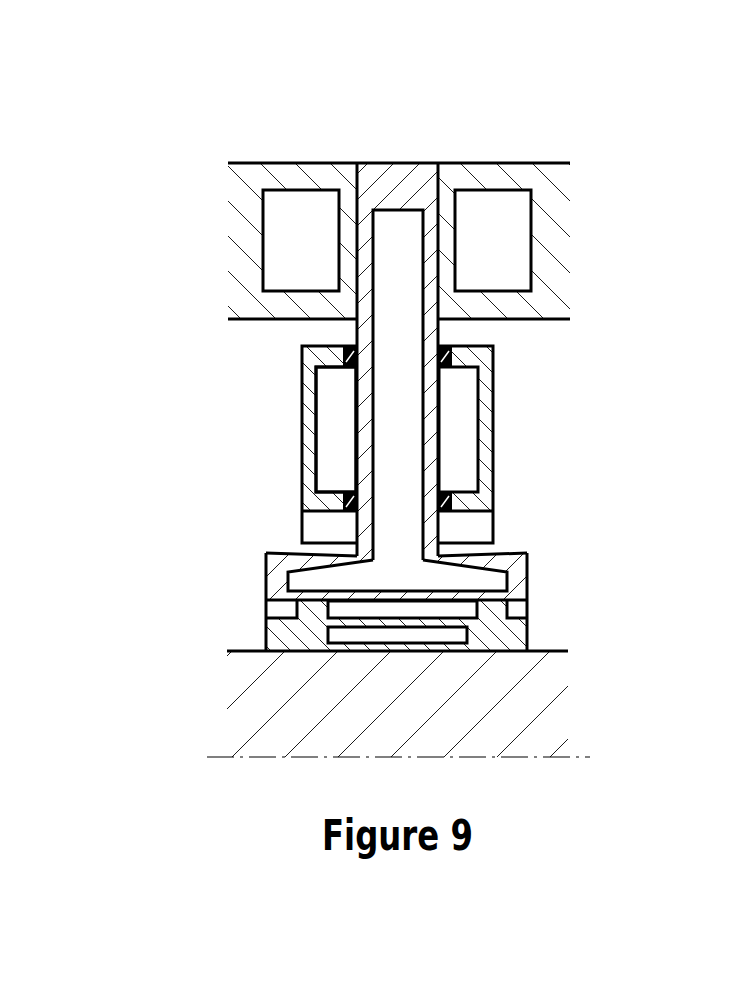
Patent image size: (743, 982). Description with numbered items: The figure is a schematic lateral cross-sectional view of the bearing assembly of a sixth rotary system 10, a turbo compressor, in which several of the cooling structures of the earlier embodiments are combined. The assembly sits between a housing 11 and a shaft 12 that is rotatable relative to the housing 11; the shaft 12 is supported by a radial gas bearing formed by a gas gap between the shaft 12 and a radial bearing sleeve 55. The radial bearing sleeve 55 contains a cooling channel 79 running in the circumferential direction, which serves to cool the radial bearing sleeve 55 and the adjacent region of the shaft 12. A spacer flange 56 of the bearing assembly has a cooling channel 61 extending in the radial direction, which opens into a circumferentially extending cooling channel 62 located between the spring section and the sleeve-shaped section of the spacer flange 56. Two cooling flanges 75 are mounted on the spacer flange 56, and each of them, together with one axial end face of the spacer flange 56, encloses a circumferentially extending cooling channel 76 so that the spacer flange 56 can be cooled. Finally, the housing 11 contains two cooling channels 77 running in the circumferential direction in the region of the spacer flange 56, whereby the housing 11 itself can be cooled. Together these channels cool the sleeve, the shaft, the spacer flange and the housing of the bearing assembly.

The valve arrangement 10 is at (200, 134).
The housing 11 is at (548, 243).
The shaft 12 is at (547, 709).
The radial bearing sleeve 55 is at (428, 677).
The spacer flange 56 is at (345, 398).
The cooling channel 61 is at (400, 437).
The cooling channel 62 is at (493, 577).
The cooling flange 75 is at (398, 444).
The cooling channel 76 is at (332, 437).
The cooling channel 77 is at (302, 212).
The cooling channel 79 is at (394, 632).